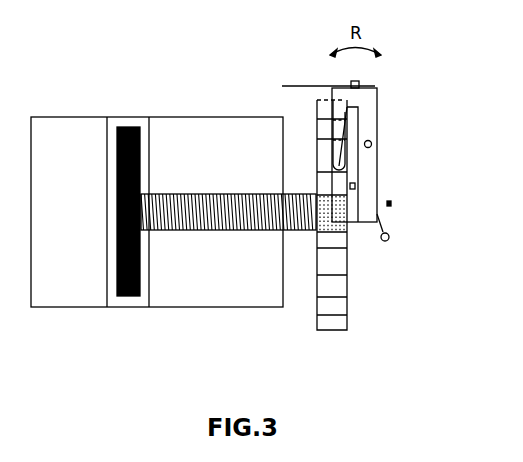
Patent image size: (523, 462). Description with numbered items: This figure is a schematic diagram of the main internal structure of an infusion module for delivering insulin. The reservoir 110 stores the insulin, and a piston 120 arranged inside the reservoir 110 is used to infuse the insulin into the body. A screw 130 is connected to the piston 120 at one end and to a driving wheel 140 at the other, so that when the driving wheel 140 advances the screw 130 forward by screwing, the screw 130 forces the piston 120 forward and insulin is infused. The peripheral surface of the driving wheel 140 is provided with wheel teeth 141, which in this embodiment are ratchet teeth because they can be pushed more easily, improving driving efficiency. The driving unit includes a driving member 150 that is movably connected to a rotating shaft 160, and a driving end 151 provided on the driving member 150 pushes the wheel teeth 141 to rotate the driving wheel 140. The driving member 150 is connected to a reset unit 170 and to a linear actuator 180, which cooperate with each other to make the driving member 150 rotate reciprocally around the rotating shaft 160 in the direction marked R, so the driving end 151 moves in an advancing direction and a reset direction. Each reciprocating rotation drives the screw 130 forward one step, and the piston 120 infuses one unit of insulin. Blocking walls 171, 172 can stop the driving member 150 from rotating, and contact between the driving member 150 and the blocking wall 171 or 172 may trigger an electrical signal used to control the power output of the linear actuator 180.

The reservoir 110 is at (44, 300).
The piston 120 is at (146, 298).
The screw 130 is at (232, 231).
The driving wheel 140 is at (323, 330).
The wheel teeth 141 is at (338, 291).
The driving member 150 is at (368, 102).
The driving end 151 is at (340, 166).
The rotating shaft 160 is at (372, 144).
The reset unit 170 is at (389, 237).
The blocking wall 171 is at (356, 186).
The blocking wall 172 is at (392, 204).
The linear actuator 180 is at (292, 85).